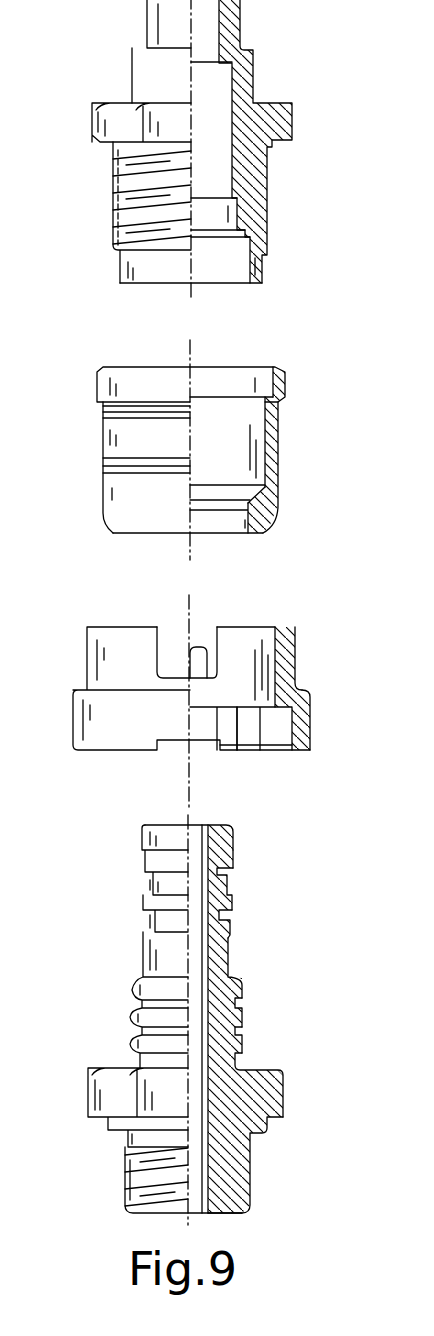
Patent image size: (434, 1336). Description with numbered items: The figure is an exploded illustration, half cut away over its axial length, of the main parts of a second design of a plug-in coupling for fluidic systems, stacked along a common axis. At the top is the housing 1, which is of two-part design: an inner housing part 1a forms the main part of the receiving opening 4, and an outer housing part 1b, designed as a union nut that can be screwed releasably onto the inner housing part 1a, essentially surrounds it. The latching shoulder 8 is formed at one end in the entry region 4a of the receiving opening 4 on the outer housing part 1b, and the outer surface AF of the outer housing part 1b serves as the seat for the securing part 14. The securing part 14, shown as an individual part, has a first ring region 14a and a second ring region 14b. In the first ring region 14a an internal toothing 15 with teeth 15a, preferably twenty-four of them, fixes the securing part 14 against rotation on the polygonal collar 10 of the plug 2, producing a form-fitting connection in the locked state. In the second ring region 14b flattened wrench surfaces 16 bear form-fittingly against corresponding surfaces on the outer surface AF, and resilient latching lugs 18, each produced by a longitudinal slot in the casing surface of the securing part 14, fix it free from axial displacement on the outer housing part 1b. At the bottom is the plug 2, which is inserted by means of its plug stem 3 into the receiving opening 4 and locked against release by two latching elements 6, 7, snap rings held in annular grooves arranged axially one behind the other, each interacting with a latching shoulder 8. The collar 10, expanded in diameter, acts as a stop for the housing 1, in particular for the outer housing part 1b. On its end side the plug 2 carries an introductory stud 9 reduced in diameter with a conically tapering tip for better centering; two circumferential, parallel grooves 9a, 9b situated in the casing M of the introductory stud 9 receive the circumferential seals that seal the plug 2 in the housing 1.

The housing 1 is at (343, 258).
The inner housing part 1a is at (270, 221).
The outer housing part 1b is at (284, 382).
The receiving opening 4 is at (218, 286).
The outer surface AF is at (279, 440).
The latching shoulder 8 is at (254, 496).
The entry region 4a is at (218, 538).
The securing part 14 is at (228, 708).
The latching lug 18 is at (178, 635).
The wrench surface 16 is at (272, 646).
The second ring region 14b is at (290, 638).
The first ring region 14a is at (302, 722).
The internal toothing 15 is at (253, 748).
The teeth 15a is at (237, 733).
The plug 2 is at (221, 1020).
The introductory stud 9 is at (222, 846).
The casing M is at (242, 855).
The groove 9a is at (226, 880).
The groove 9b is at (224, 924).
The plug stem 3 is at (232, 976).
The latching element 6 is at (246, 1003).
The latching element 7 is at (244, 1032).
The collar 10 is at (270, 1078).